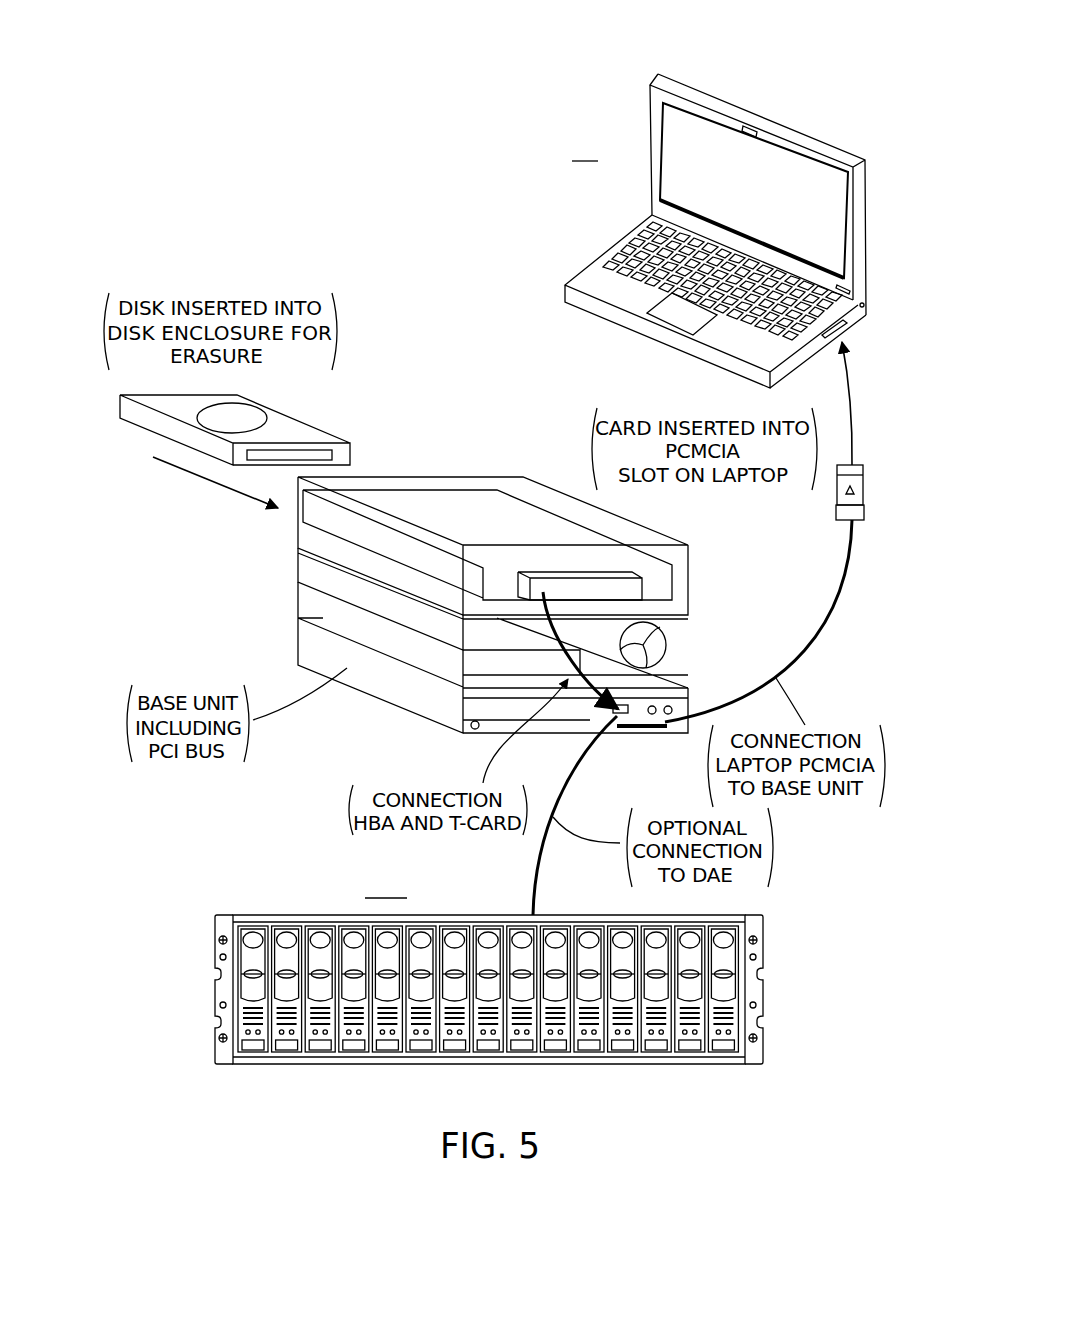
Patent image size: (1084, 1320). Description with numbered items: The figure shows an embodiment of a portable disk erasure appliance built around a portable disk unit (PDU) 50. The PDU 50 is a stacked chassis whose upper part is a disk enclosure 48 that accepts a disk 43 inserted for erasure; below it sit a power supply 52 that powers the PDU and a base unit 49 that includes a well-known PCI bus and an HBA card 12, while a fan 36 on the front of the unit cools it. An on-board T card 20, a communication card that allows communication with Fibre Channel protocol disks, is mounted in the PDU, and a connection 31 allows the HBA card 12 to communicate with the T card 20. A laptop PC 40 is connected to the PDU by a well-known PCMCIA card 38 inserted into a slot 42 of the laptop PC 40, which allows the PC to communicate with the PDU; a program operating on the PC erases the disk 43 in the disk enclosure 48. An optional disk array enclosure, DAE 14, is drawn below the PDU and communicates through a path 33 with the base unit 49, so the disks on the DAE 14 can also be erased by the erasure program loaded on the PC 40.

The HBA card 12 is at (492, 707).
The DAE 14 is at (763, 943).
The T card 20 is at (637, 589).
The connection 31 is at (580, 675).
The path 33 is at (537, 878).
The fan 36 is at (668, 643).
The PCMCIA card 38 is at (837, 502).
The Laptop PC 40 is at (652, 192).
The slot 42 is at (847, 327).
The disk 43 is at (308, 437).
The disk enclosure 48 is at (478, 500).
The base unit 49 is at (317, 655).
The portable disk unit (PDU) 50 is at (485, 589).
The power supply 52 is at (378, 583).